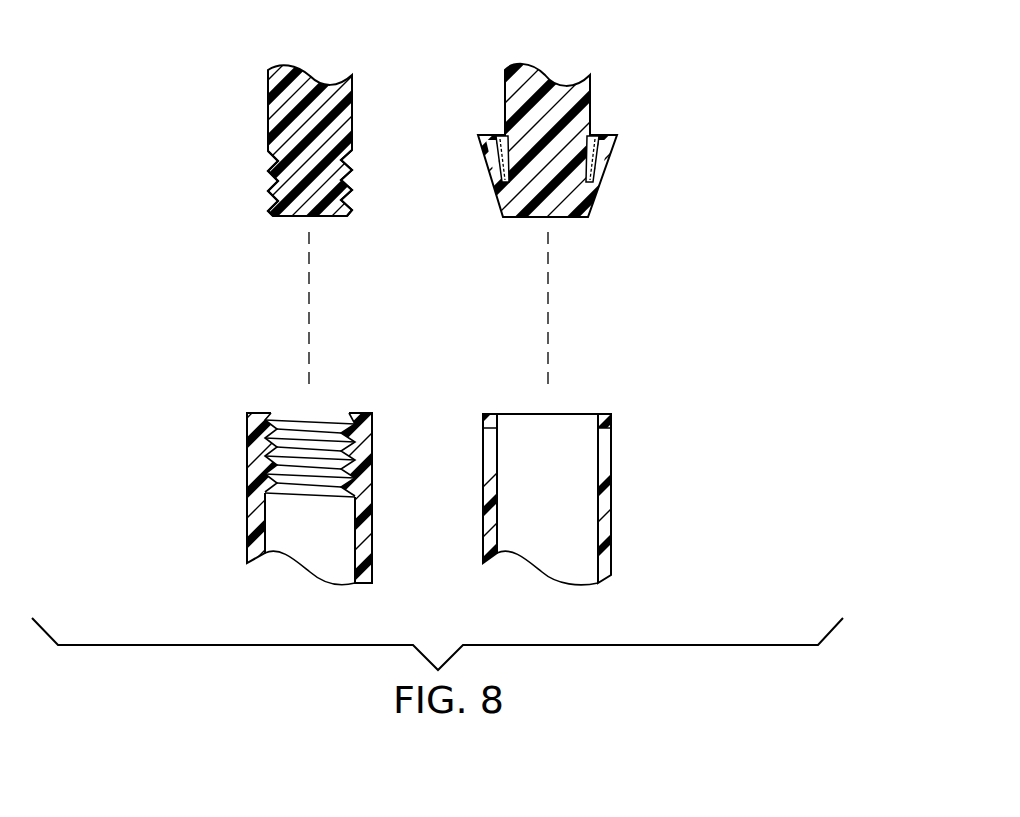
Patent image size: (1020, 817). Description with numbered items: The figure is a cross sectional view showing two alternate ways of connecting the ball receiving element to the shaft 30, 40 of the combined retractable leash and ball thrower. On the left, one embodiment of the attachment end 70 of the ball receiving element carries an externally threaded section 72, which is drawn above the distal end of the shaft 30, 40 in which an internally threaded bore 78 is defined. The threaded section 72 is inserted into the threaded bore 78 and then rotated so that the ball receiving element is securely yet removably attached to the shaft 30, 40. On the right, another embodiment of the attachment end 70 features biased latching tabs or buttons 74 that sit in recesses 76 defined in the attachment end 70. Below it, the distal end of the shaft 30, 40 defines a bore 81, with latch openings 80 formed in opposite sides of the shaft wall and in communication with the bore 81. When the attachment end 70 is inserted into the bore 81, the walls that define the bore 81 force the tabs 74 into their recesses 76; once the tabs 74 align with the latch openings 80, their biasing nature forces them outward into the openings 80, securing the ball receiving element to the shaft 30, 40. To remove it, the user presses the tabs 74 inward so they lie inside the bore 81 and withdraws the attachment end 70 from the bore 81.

The attachment end 70 is at (268, 128).
The externally threaded section 72 is at (268, 190).
The biased latching tabs 74 is at (480, 137).
The recesses 76 is at (596, 138).
The internally threaded bore 78 is at (293, 422).
The latch openings 80 is at (482, 440).
The bore 81 is at (553, 423).
The shaft 30 is at (262, 512).
The shaft 40 is at (612, 542).